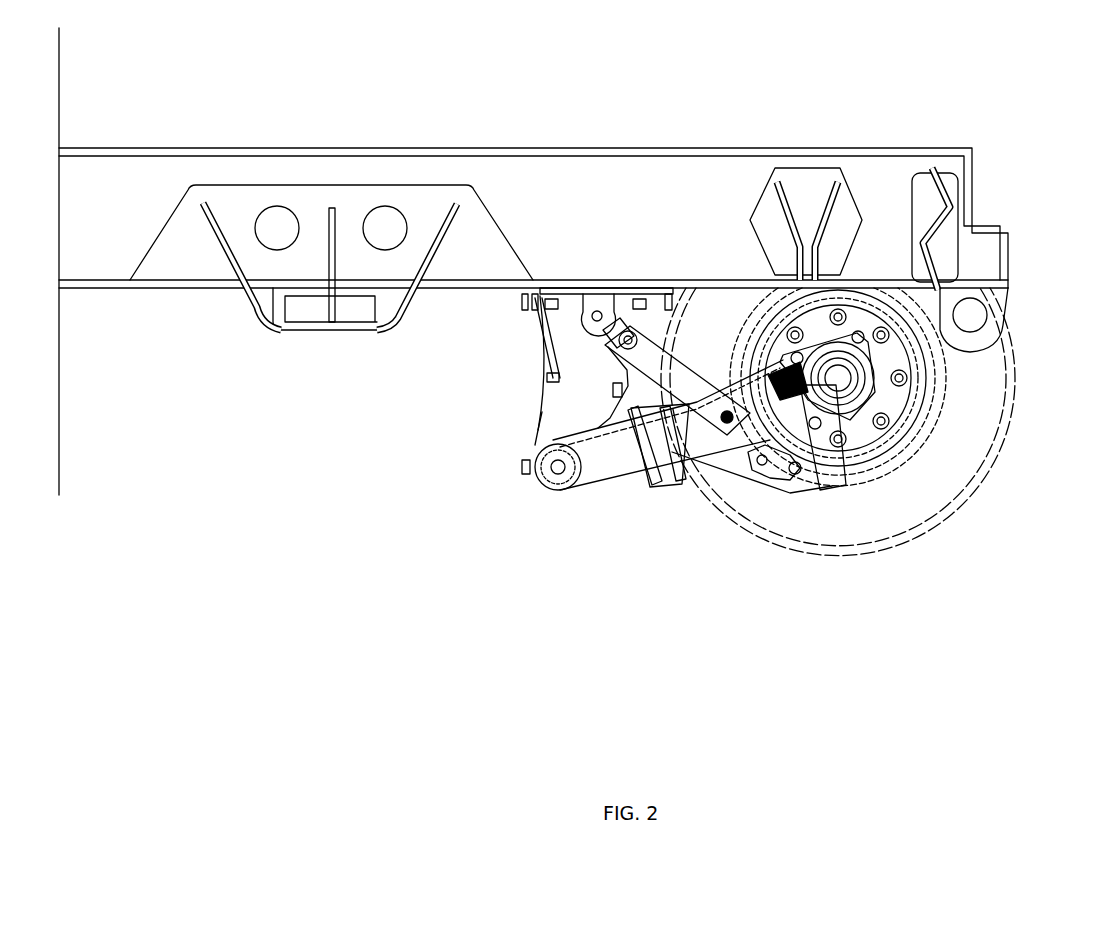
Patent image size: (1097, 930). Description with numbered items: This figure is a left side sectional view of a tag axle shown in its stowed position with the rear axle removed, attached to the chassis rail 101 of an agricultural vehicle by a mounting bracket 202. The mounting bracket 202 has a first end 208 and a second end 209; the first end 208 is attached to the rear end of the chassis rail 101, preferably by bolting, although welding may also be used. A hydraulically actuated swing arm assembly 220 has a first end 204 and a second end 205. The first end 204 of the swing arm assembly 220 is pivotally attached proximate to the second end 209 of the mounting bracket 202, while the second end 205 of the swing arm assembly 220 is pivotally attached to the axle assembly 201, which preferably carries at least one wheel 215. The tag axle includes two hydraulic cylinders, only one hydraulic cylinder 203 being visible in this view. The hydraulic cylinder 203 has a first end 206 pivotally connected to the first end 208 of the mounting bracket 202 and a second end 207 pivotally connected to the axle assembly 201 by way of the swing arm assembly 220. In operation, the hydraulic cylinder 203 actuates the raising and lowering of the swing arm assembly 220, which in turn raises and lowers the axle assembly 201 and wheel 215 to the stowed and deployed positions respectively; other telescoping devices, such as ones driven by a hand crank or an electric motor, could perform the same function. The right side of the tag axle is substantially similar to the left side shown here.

The chassis rail 101 is at (582, 147).
The axle assembly 201 is at (840, 378).
The mounting bracket 202 is at (537, 357).
The hydraulic cylinder 203 is at (718, 425).
The first end of the swing arm assembly 204 is at (556, 492).
The second end of the swing arm assembly 205 is at (812, 490).
The first end of the hydraulic cylinder 206 is at (614, 296).
The second end of the hydraulic cylinder 207 is at (767, 470).
The first end of the mounting bracket 208 is at (532, 320).
The second end of the mounting bracket 209 is at (530, 422).
The wheel 215 is at (1016, 404).
The swing arm assembly 220 is at (637, 475).